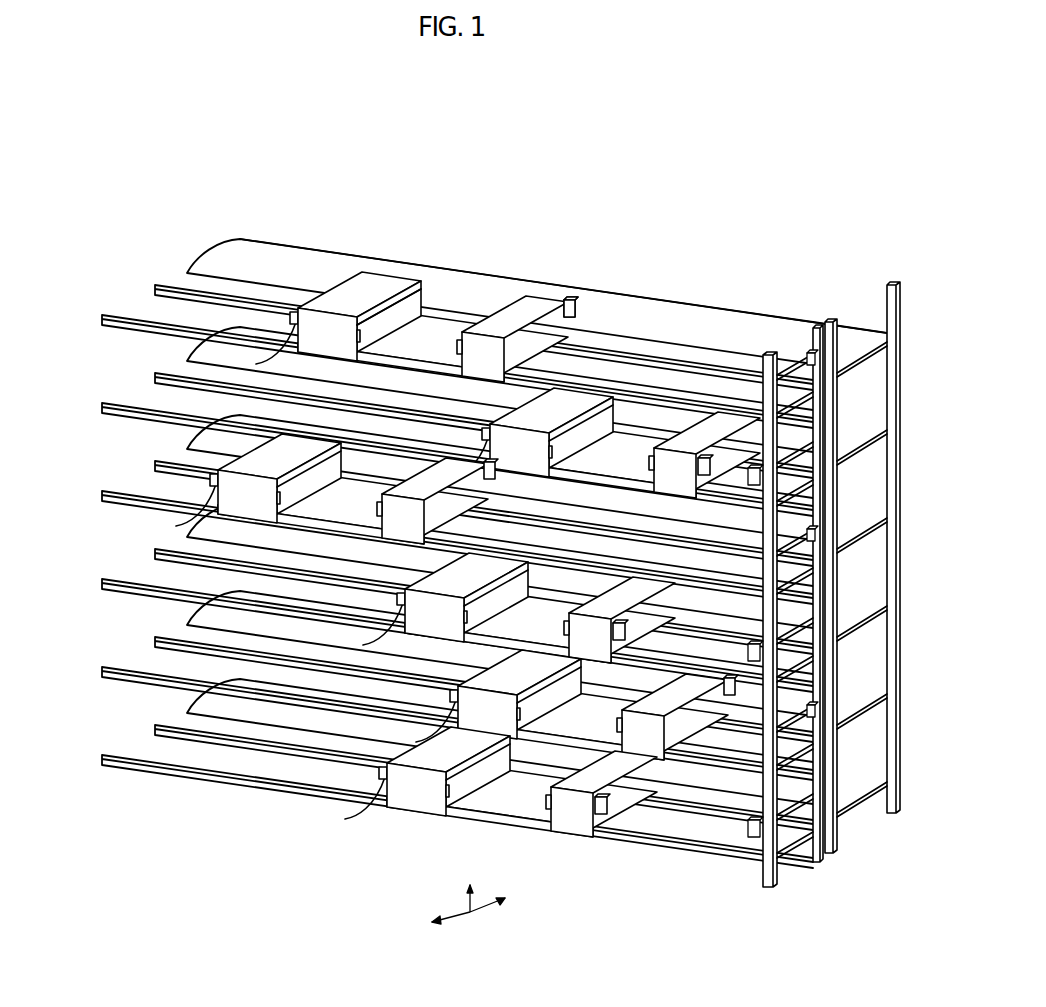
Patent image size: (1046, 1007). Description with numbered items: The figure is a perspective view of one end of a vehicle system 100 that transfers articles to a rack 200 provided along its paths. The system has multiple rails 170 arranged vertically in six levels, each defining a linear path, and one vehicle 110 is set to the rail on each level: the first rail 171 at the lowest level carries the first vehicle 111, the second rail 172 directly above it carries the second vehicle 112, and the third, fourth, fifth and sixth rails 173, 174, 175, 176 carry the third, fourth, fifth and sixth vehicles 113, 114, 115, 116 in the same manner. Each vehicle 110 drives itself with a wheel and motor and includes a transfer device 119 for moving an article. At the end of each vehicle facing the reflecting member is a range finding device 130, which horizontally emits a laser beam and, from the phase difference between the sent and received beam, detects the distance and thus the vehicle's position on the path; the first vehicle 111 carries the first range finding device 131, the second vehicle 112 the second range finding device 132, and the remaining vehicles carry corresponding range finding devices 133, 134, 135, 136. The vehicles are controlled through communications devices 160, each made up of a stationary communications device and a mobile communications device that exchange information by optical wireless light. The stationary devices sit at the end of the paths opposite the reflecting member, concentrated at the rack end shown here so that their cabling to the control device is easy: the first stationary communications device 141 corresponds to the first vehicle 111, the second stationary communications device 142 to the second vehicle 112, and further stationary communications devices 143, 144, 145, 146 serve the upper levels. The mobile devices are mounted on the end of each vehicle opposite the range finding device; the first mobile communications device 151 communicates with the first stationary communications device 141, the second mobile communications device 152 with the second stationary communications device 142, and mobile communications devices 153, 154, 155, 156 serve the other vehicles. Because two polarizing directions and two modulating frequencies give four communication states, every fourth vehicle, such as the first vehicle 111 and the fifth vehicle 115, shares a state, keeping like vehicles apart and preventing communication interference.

The vehicle system 100 is at (489, 571).
The vehicle 110 is at (447, 555).
The first vehicle 111 is at (387, 785).
The second vehicle 112 is at (455, 702).
The third unit block 113 is at (405, 605).
The fourth unit block 114 is at (215, 497).
The fifth vehicle 115 is at (490, 445).
The sixth unit block 116 is at (362, 285).
The transfer device 119 is at (425, 285).
The range finding device 130 is at (525, 504).
The first range finding device 131 is at (432, 750).
The second range finding device 132 is at (462, 680).
The third guide sheet 133 is at (438, 573).
The fourth guide sheet 134 is at (205, 472).
The fifth guide sheet 135 is at (543, 397).
The sixth guide sheet 136 is at (297, 300).
The first stationary communications device 141 is at (754, 838).
The second stationary communications device 142 is at (815, 718).
The third rack sensor 143 is at (752, 662).
The fourth rack sensor 144 is at (815, 542).
The fifth rack sensor 145 is at (753, 487).
The sixth rack sensor 146 is at (815, 360).
The first mobile communications device 151 is at (680, 891).
The second mobile communications device 152 is at (724, 698).
The third unit sensor 153 is at (622, 640).
The fourth unit sensor 154 is at (485, 482).
The fifth unit sensor 155 is at (702, 480).
The sixth unit sensor 156 is at (560, 320).
The communications device 160 is at (568, 300).
The rail 170 is at (445, 563).
The first rail 171 is at (108, 752).
The second rail 172 is at (108, 664).
The third rail 173 is at (108, 576).
The fourth rail 174 is at (108, 488).
The fifth rail 175 is at (110, 400).
The sixth rail 176 is at (110, 312).
The rack 200 is at (730, 325).